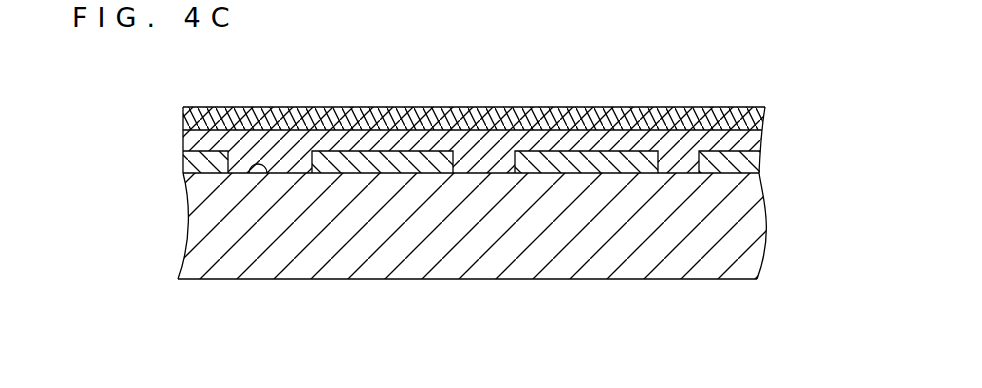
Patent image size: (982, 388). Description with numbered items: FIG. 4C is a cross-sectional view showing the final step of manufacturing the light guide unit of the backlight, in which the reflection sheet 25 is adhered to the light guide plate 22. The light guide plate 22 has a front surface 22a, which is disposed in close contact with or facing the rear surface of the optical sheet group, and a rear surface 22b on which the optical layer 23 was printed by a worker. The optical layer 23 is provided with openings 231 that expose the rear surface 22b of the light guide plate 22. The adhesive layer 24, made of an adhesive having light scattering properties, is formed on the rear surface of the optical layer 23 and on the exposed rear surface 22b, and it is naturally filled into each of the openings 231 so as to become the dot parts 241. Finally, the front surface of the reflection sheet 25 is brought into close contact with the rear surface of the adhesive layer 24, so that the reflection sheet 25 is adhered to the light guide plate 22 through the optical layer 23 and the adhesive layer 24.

The light guide plate 22 is at (773, 220).
The front surface of the light guide plate 22a is at (402, 281).
The rear surface of the light guide plate 22b is at (262, 176).
The optical layer 23 is at (762, 162).
The opening 231 is at (312, 173).
The adhesive layer 24 is at (762, 138).
The dot part 241 is at (288, 160).
The reflection sheet 25 is at (767, 117).